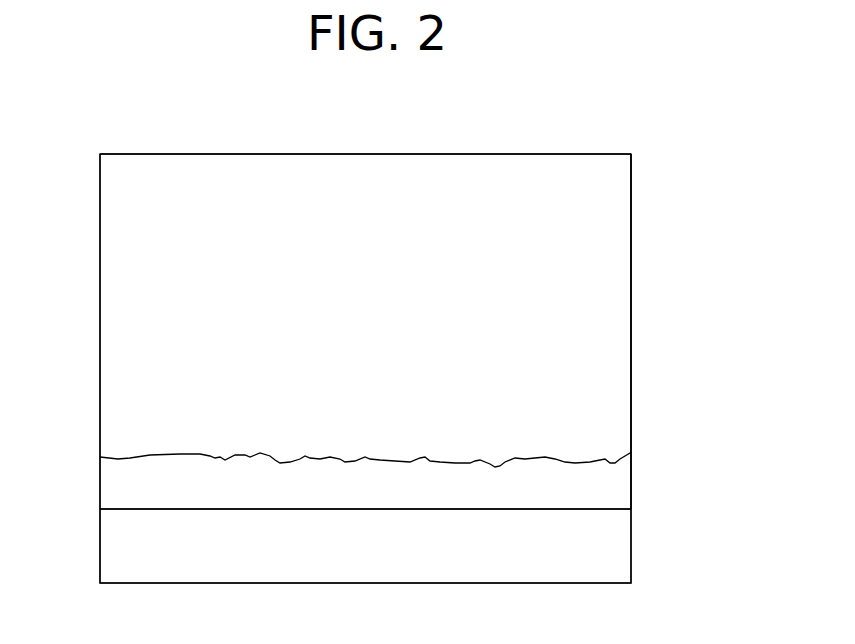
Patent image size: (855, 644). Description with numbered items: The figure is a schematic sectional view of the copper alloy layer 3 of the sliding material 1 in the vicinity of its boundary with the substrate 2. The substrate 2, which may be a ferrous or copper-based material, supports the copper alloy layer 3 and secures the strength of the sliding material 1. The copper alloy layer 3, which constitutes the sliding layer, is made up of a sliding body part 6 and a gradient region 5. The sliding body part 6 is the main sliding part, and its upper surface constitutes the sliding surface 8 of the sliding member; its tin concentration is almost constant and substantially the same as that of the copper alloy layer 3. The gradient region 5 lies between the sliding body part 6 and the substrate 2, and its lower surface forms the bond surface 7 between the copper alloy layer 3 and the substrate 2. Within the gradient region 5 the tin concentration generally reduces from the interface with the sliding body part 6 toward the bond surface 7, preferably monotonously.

The sliding material 1 is at (604, 129).
The substrate 2 is at (605, 548).
The copper alloy layer 3 is at (705, 154).
The gradient region 5 is at (605, 483).
The sliding body part 6 is at (605, 306).
The bond surface 7 is at (118, 509).
The sliding surface 8 is at (365, 153).